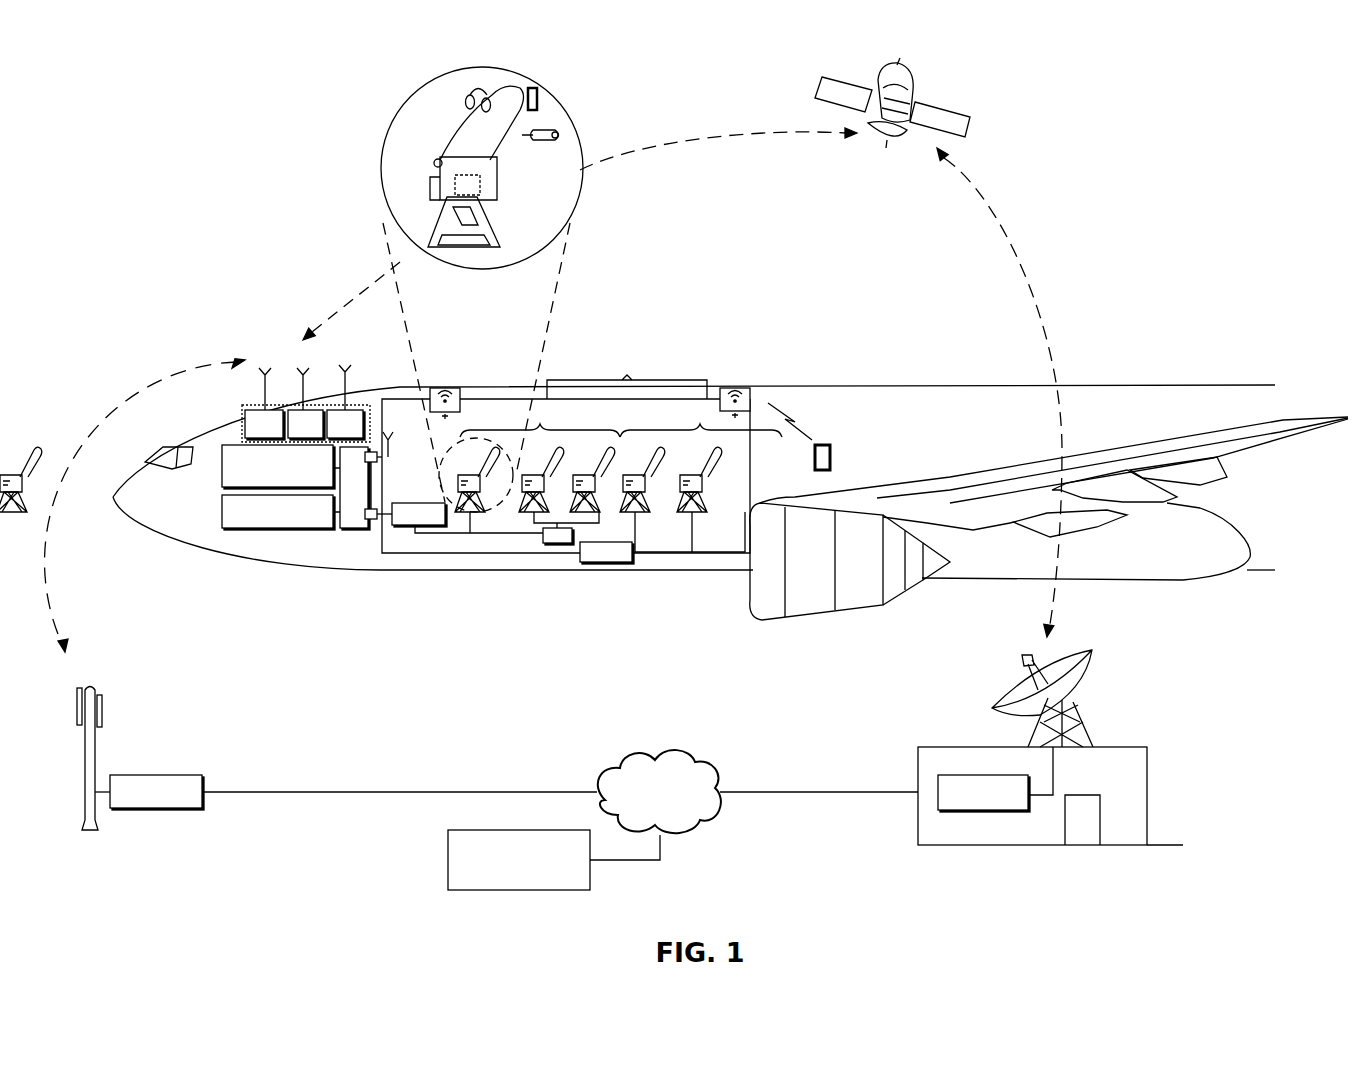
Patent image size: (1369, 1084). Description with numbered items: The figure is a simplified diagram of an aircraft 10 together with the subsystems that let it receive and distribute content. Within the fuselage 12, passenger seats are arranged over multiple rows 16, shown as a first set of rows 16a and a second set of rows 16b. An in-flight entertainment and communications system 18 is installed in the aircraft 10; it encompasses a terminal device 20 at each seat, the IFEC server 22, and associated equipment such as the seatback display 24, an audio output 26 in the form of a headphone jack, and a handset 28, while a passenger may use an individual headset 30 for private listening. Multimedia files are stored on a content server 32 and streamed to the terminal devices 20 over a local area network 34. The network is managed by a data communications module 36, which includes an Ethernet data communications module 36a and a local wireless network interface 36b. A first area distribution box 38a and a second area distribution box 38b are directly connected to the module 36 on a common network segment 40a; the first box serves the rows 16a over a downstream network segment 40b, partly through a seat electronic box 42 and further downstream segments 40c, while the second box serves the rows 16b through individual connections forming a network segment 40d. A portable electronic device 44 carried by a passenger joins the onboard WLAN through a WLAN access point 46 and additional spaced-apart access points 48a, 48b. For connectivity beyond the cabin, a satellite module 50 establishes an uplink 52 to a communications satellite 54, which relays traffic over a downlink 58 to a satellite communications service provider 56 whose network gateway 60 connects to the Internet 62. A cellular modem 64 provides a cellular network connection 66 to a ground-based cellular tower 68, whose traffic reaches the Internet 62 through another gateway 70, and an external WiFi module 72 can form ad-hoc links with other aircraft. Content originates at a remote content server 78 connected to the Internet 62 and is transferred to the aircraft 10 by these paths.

The aircraft 10 is at (674, 477).
The fuselage 12 is at (991, 385).
The rows 16 is at (391, 433).
The first set of rows 16a is at (529, 458).
The second set of rows 16b is at (391, 458).
The in-flight entertainment and communications (IFEC) system 18 is at (260, 550).
The terminal device 20 is at (443, 284).
The IFEC server 22 is at (221, 503).
The display 24 is at (539, 100).
The audio output 26 is at (434, 162).
The handset 28 is at (551, 141).
The headset 30 is at (465, 102).
The content server 32 is at (221, 450).
The local area network 34 is at (328, 548).
The data communications module 36 is at (372, 470).
The Ethernet data communications module 36a is at (378, 511).
The local wireless network interface 36b is at (372, 450).
The first area distribution box 38a is at (398, 527).
The second area distribution box 38b is at (605, 563).
The network segment 40a is at (383, 520).
The downstream network segment 40b is at (445, 536).
The further downstream network segments 40c is at (563, 487).
The network segment 40d is at (675, 553).
The seat electronic box 42 is at (557, 543).
The portable electronic device 44 is at (822, 444).
The WLAN access point 46 is at (391, 441).
The additional WLAN access point 48a is at (447, 387).
The additional WLAN access point 48b is at (735, 387).
The satellite module 50 is at (293, 408).
The uplink 52 is at (677, 143).
The communications satellite 54 is at (847, 82).
The satellite communications service provider 56 is at (1064, 767).
The downlink 58 is at (1018, 268).
The network gateway 60 is at (985, 810).
The Internet 62 is at (708, 767).
The cellular modem 64 is at (327, 417).
The cellular network connection 66 is at (57, 550).
The cellular tower 68 is at (97, 828).
The gateway 70 is at (155, 775).
The external WiFi module 72 is at (330, 408).
The remote content server 78 is at (448, 860).